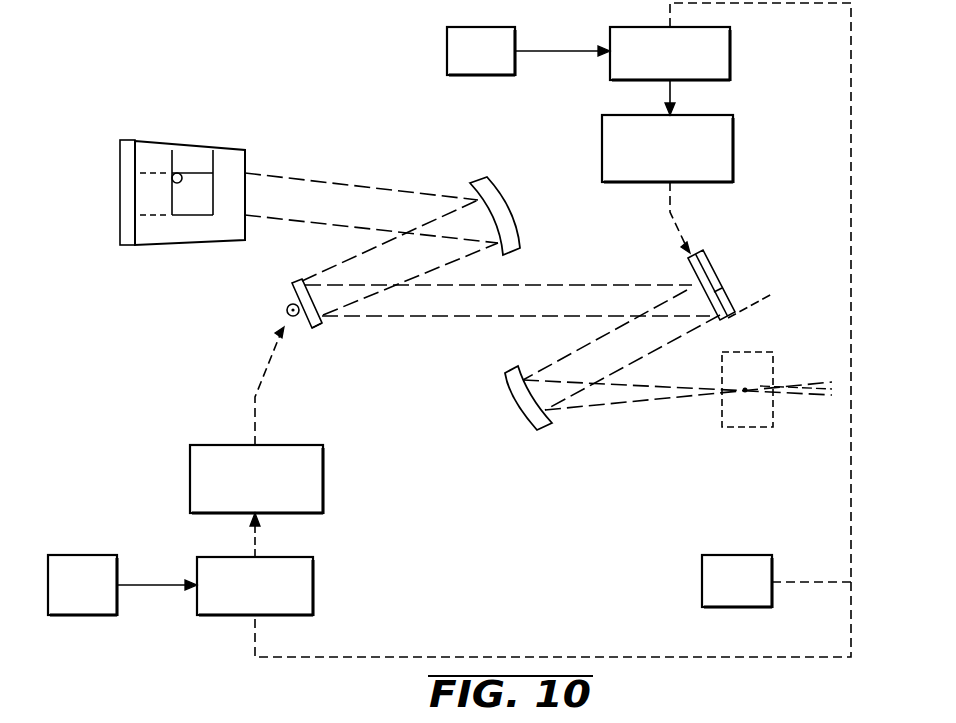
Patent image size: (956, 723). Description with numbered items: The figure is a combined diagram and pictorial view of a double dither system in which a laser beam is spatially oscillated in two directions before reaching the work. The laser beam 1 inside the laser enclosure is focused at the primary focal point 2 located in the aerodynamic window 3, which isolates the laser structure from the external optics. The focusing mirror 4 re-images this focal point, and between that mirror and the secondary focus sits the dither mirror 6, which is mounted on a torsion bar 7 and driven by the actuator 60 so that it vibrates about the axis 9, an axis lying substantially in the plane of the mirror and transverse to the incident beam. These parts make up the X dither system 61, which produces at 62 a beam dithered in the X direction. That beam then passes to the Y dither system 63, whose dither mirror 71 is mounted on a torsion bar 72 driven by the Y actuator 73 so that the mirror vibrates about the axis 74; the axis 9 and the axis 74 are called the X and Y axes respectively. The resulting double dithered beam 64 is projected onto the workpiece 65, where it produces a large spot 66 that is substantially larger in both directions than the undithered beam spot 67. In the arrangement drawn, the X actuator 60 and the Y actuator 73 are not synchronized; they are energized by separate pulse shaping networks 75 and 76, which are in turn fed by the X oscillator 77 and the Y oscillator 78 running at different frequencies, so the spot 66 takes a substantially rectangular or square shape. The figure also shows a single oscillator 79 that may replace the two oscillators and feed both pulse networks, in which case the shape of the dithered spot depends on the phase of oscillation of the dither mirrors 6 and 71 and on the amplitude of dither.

The laser beam 1 is at (805, 386).
The focal point 2 is at (746, 393).
The aerodynamic window 3 is at (722, 427).
The focusing mirror 4 is at (538, 432).
The dither mirror 6 is at (692, 284).
The torsion bar 7 is at (710, 262).
The axis 9 is at (724, 288).
The actuator 60 is at (733, 118).
The X dither system 61 is at (713, 213).
The beam dithered in the X direction 62 is at (556, 284).
The Y dither system 63 is at (232, 298).
The double dithered beam 64 is at (311, 178).
The workpiece 65 is at (135, 142).
The large spot 66 is at (192, 218).
The undithered beam spot 67 is at (174, 174).
The dither mirror 71 is at (315, 331).
The torsion bar 72 is at (290, 298).
The Y actuator 73 is at (323, 510).
The axis 74 is at (286, 312).
The pulse shaping network 75 is at (731, 45).
The pulse shaping network 76 is at (313, 613).
The X oscillator 77 is at (515, 33).
The Y oscillator 78 is at (118, 557).
The single oscillator 79 is at (702, 605).